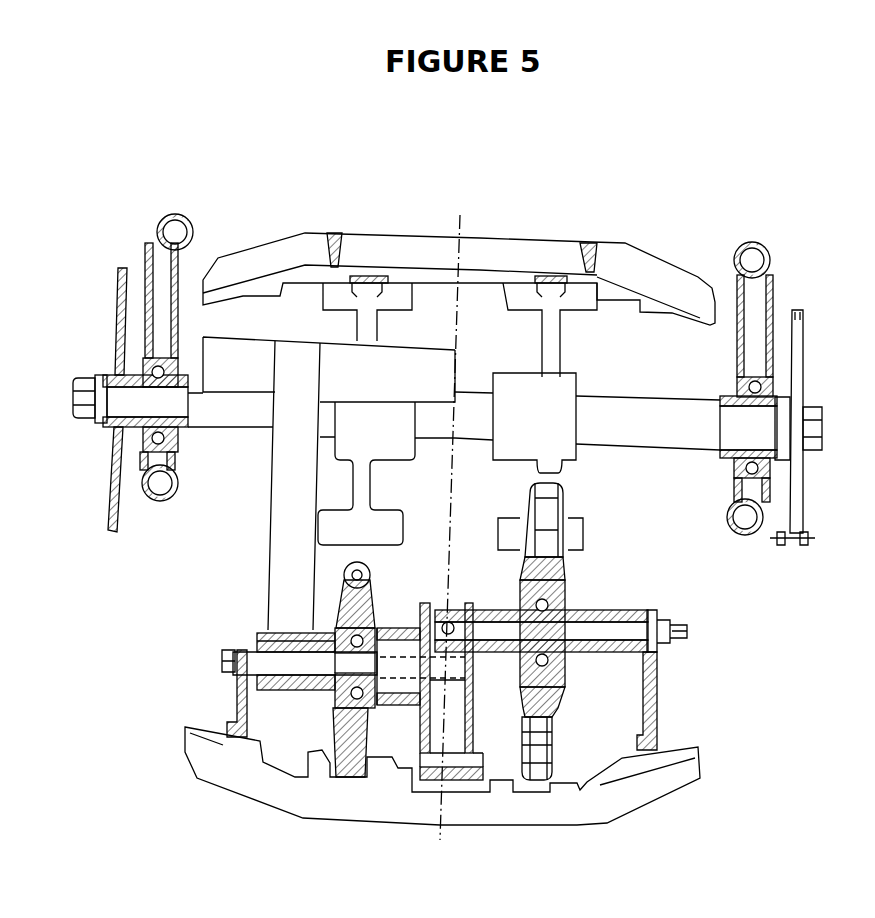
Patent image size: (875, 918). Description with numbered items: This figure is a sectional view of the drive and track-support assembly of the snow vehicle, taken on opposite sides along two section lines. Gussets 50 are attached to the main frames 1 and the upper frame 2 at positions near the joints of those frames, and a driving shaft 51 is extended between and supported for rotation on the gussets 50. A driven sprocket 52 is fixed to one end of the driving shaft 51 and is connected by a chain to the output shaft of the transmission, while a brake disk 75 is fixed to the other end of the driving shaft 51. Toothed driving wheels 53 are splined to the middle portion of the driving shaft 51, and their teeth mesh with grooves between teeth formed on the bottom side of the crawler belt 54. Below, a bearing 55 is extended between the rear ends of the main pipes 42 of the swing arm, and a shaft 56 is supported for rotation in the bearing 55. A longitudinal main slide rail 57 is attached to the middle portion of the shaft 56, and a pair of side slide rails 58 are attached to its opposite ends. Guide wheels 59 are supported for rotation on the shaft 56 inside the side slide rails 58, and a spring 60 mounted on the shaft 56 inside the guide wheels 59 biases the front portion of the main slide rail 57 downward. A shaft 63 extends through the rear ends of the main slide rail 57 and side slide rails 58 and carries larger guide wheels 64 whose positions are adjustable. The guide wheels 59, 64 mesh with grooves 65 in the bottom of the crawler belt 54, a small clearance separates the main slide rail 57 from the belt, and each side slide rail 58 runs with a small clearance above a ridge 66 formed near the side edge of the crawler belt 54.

The main frame 1 is at (160, 503).
The upper frame 2 is at (165, 214).
The main pipe 42 is at (285, 490).
The gusset 50 is at (148, 262).
The driving shaft 51 is at (643, 402).
The driven sprocket 52 is at (803, 340).
The toothed driving wheel 53 is at (365, 288).
The crawler belt 54 is at (487, 243).
The bearing 55 is at (268, 630).
The shaft 56 is at (238, 650).
The main slide rail 57 is at (465, 792).
The side slide rail 58 is at (237, 695).
The guide wheel 59 is at (372, 580).
The spring 60 is at (390, 707).
The shaft 63 is at (660, 630).
The guide wheel 64 is at (566, 585).
The groove 65 is at (345, 778).
The ridge 66 is at (240, 752).
The brake disk 75 is at (112, 500).